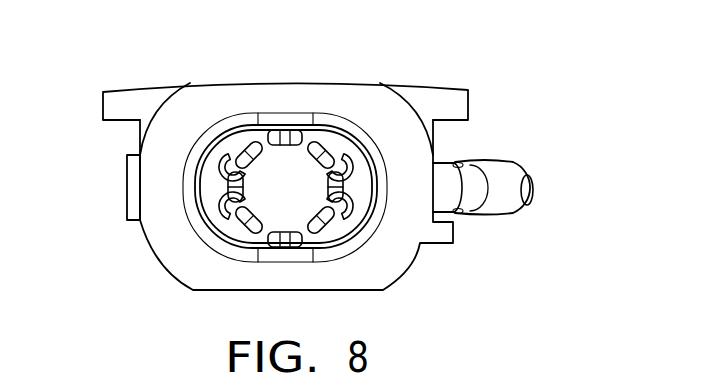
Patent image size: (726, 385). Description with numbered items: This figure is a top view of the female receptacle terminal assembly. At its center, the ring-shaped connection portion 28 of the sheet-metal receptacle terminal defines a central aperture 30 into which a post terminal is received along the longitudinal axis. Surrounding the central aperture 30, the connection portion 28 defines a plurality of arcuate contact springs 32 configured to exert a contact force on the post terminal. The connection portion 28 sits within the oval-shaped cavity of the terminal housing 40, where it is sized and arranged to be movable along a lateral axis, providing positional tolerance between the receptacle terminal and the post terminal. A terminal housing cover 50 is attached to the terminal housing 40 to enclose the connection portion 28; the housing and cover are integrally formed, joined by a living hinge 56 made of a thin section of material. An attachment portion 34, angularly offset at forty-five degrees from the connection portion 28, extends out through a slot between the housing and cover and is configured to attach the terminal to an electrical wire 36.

The connection portion 28 is at (357, 193).
The central aperture 30 is at (285, 192).
The arcuate contact spring 32 is at (320, 223).
The attachment portion 34 is at (503, 173).
The electrical wire 36 is at (533, 195).
The terminal housing 40 is at (430, 90).
The terminal housing cover 50 is at (212, 92).
The living hinge 56 is at (127, 195).